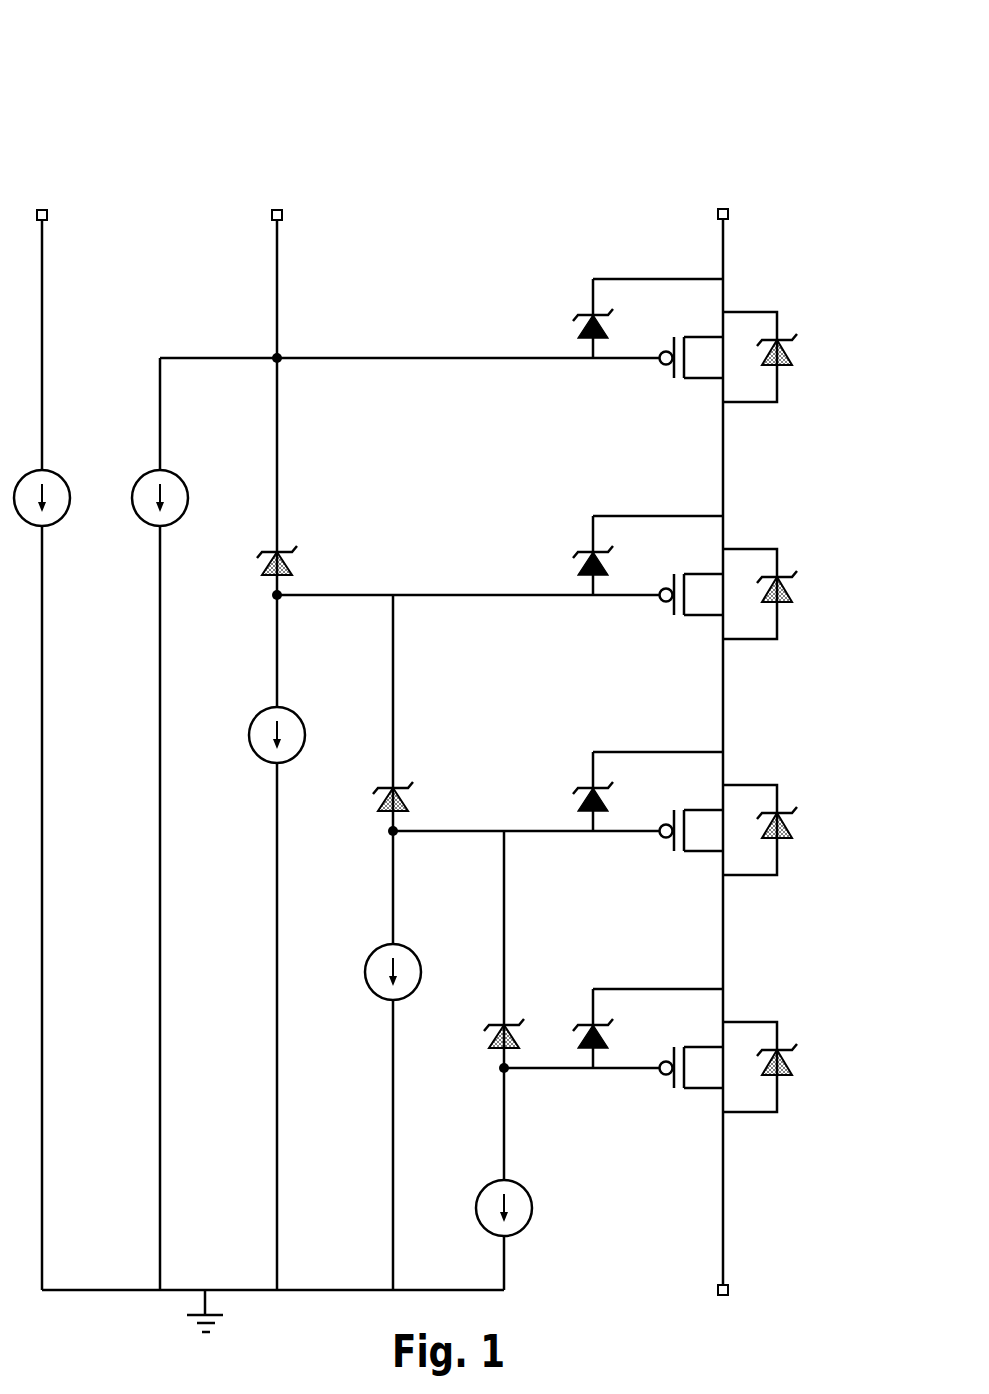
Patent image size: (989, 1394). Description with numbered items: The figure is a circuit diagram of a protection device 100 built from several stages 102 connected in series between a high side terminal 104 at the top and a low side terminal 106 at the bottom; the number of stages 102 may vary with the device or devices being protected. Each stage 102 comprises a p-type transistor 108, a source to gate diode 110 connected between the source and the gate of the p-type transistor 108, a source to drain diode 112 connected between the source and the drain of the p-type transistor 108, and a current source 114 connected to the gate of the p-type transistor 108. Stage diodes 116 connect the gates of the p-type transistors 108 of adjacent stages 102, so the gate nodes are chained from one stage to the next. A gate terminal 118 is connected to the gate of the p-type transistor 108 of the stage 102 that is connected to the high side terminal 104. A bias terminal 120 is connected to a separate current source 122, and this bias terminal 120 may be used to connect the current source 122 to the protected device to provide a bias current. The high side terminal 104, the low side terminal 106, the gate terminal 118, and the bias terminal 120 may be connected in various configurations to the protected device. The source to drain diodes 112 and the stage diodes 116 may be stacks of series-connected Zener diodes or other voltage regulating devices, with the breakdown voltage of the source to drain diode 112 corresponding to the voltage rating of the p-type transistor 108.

The protection device 100 is at (103, 68).
The stage 102 is at (770, 263).
The high side terminal 104 is at (727, 209).
The low side terminal 106 is at (727, 1295).
The p-type transistor 108 is at (667, 376).
The source to gate (SG) diode 110 is at (581, 327).
The source to drain (SD) diode 112 is at (784, 351).
The current source 114 is at (179, 478).
The stage diode 116 is at (264, 565).
The gate terminal 118 is at (280, 210).
The bias terminal 120 is at (45, 210).
The current source 122 is at (61, 478).